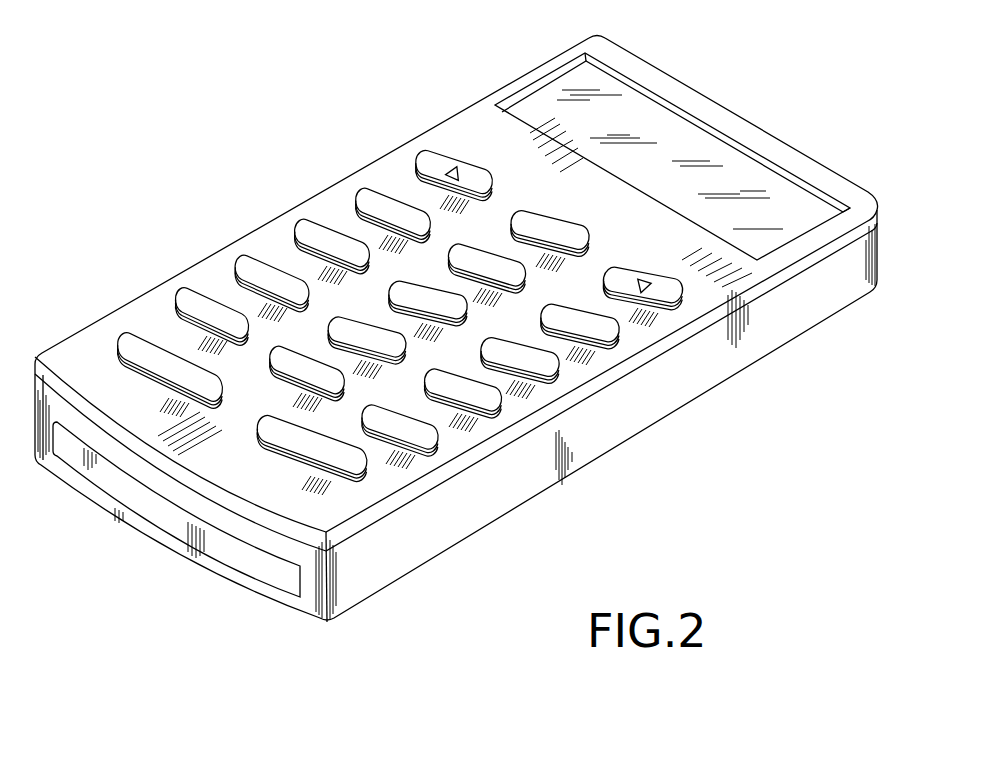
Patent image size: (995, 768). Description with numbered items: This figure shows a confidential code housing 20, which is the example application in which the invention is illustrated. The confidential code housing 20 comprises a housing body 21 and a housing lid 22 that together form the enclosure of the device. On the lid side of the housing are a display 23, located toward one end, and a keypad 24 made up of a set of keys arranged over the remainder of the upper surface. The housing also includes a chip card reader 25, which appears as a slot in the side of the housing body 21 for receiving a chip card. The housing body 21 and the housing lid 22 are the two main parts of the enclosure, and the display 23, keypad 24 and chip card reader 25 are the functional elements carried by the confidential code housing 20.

The confidential code housing 20 is at (485, 527).
The housing body 21 is at (603, 423).
The housing lid 22 is at (655, 353).
The display 23 is at (687, 143).
The keypad 24 is at (373, 198).
The chip card reader 25 is at (178, 519).